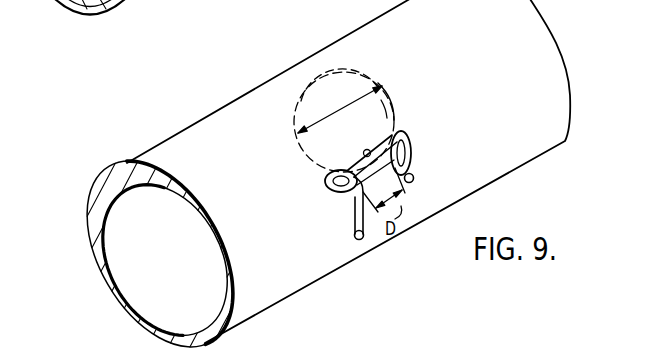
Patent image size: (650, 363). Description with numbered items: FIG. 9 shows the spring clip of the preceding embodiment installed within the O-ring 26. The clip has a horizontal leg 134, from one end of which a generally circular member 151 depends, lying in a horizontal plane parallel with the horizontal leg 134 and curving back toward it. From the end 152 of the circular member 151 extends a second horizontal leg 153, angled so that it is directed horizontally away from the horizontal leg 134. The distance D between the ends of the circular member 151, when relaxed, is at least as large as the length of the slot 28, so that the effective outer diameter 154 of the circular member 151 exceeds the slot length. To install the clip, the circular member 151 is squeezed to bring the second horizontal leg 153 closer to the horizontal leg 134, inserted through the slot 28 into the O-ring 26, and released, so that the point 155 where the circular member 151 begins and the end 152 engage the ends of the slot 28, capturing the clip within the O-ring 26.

The O-ring 26 is at (362, 258).
The slot 28 is at (366, 149).
The circular member 151 is at (367, 71).
The end of the circular member 152 is at (406, 142).
The second horizontal leg 153 is at (414, 178).
The effective outer diameter 154 is at (393, 104).
The point where the circular member begins 155 is at (327, 190).
The horizontal leg 134 is at (354, 208).